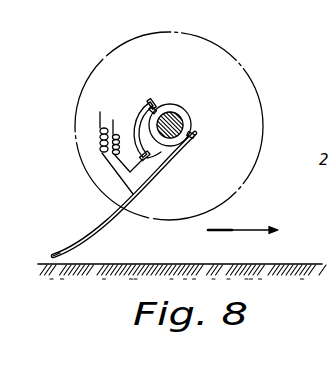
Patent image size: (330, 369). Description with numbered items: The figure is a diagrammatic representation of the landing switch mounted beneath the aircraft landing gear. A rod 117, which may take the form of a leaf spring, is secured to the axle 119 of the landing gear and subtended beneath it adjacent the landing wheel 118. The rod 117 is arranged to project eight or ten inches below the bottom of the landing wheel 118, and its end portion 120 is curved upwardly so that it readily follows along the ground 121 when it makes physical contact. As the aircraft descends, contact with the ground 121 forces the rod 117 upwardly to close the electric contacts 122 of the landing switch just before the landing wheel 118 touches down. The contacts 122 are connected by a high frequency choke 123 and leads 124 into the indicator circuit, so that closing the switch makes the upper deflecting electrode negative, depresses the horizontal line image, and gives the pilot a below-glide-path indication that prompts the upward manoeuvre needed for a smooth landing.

The rod 117 is at (100, 236).
The landing wheel 118 is at (218, 49).
The axle 119 is at (179, 118).
The end portion 120 is at (63, 243).
The ground 121 is at (188, 265).
The electric contacts 122 is at (164, 151).
The high frequency choke 123 is at (104, 106).
The leads 124 is at (113, 120).